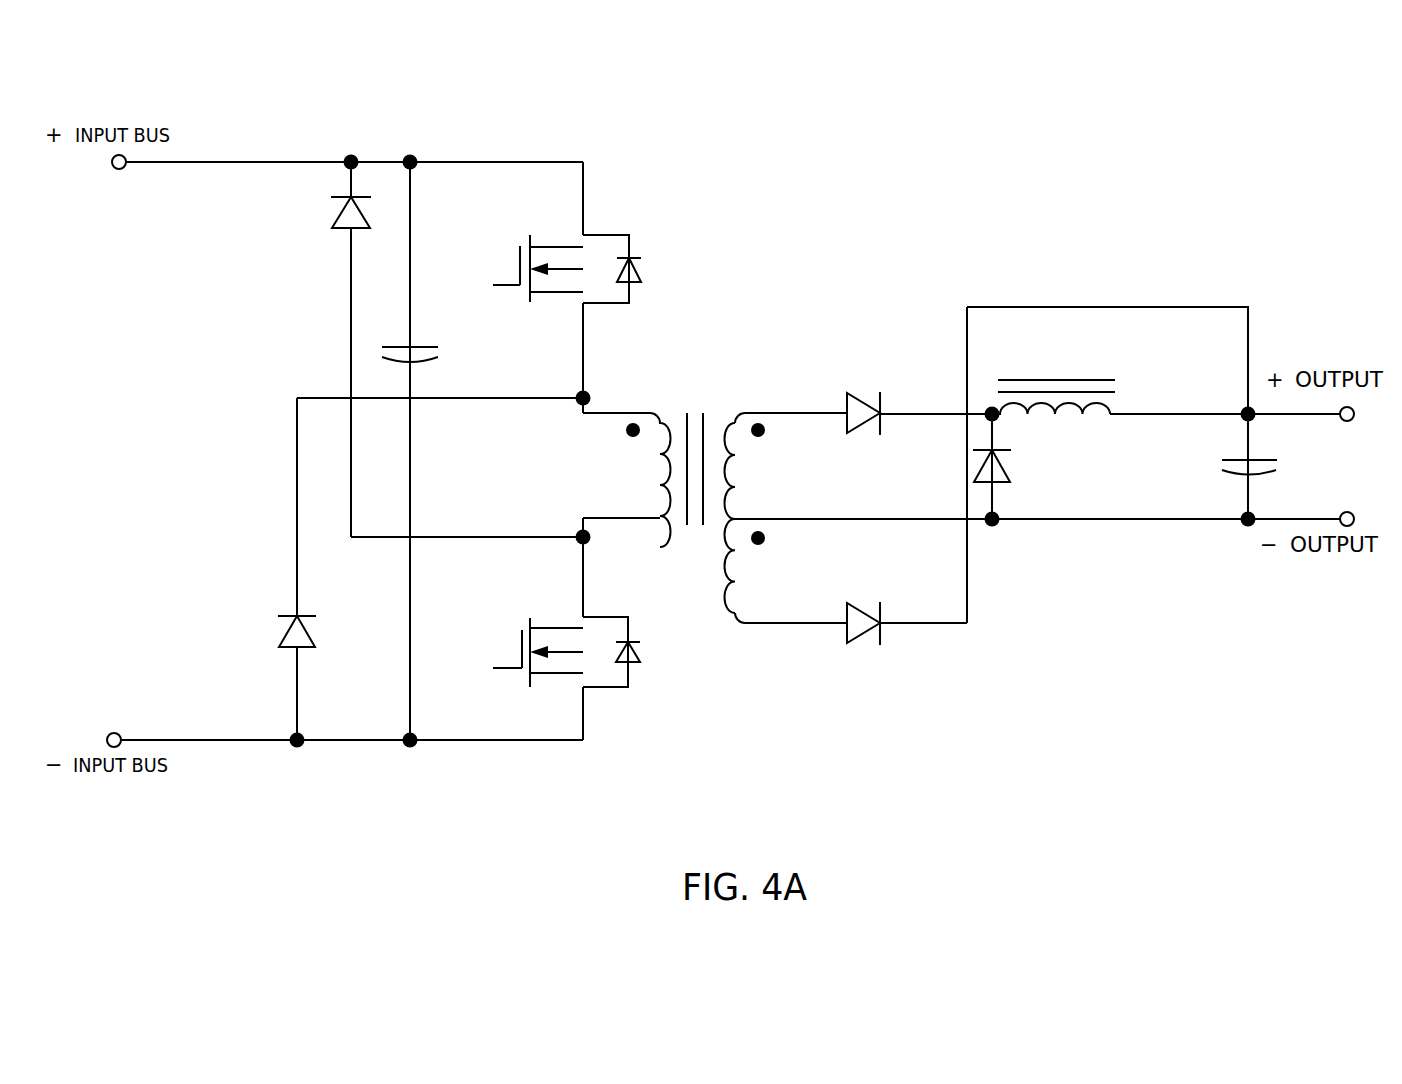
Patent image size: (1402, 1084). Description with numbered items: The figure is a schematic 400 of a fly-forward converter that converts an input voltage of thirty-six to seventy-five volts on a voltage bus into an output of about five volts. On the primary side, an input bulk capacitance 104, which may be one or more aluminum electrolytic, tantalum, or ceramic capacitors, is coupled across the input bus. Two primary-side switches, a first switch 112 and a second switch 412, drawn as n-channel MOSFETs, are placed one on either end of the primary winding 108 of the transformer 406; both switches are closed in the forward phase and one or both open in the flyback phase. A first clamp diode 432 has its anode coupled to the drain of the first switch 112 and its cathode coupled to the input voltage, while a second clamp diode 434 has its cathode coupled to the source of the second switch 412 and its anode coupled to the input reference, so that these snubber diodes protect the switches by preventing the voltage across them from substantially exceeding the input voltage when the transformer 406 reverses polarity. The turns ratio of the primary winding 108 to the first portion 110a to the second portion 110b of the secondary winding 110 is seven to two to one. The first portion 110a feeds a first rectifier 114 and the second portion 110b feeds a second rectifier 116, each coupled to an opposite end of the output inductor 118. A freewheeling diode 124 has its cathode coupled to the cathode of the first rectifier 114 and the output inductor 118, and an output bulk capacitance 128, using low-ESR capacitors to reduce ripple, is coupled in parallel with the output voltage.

The schematic 400 is at (1045, 180).
The first clamp diode 432 is at (346, 229).
The second clamp diode 434 is at (283, 617).
The input bulk capacitance 104 is at (421, 346).
The second switch 412 is at (633, 215).
The first switch 112 is at (660, 695).
The transformer 406 is at (692, 347).
The primary winding 108 is at (630, 495).
The secondary winding 110 is at (725, 630).
The first portion of the secondary winding 110a is at (757, 471).
The second portion of the secondary winding 110b is at (760, 566).
The first rectifier 114 is at (847, 397).
The second rectifier 116 is at (857, 640).
The output inductor 118 is at (1062, 417).
The freewheeling diode 124 is at (1003, 483).
The output bulk capacitance 128 is at (1227, 458).